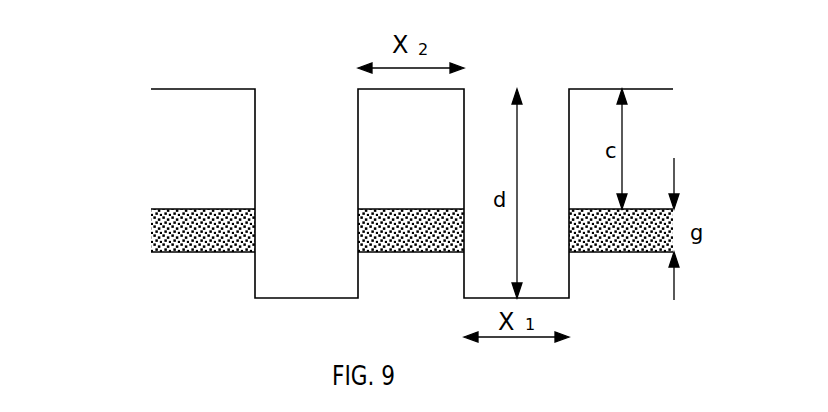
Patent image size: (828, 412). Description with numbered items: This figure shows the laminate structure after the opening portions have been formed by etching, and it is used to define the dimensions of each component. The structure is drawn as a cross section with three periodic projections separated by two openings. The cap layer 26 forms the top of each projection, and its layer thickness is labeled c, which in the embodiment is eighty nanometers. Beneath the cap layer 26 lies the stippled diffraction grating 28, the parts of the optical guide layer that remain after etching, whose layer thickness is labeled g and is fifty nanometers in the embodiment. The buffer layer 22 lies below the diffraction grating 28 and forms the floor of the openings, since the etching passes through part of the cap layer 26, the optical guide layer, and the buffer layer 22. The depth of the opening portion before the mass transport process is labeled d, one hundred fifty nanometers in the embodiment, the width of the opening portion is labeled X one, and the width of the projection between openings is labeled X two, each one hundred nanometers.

The cap layer 26 is at (180, 167).
The diffraction grating 28 is at (180, 228).
The buffer layer 22 is at (180, 293).